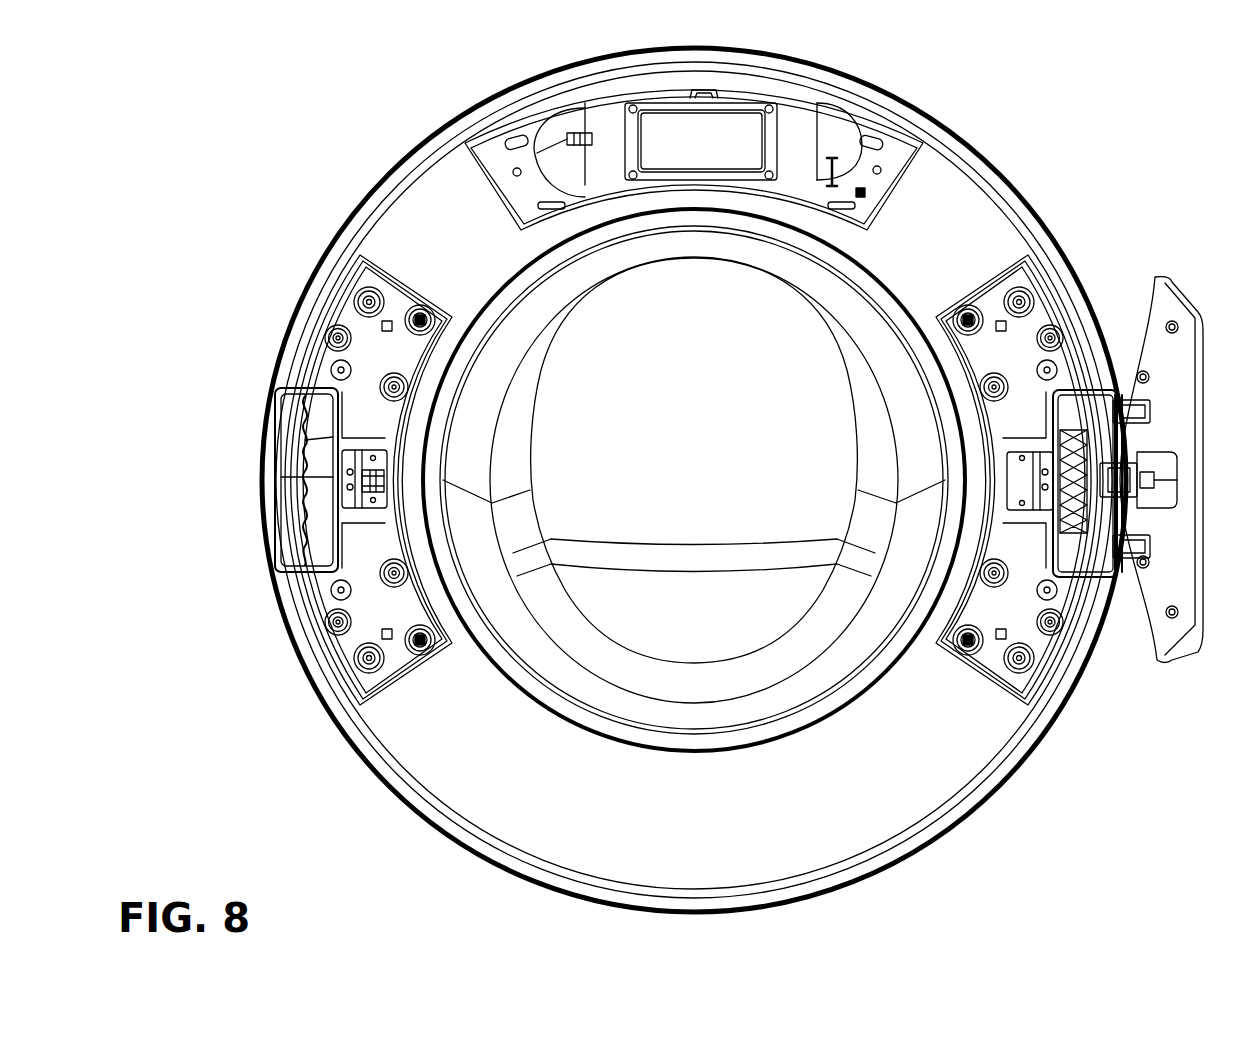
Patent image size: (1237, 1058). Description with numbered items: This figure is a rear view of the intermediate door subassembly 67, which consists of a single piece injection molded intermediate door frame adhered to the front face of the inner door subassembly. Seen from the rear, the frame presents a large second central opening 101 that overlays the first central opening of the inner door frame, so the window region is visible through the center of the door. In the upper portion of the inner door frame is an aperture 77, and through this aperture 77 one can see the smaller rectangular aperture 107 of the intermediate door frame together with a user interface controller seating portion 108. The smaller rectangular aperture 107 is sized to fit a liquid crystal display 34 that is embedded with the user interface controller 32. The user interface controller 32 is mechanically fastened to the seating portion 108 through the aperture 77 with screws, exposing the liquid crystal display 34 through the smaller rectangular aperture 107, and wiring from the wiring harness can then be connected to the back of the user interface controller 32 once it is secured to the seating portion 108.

The intermediate door subassembly 67 is at (955, 98).
The second central opening 101 is at (678, 452).
The aperture 77 is at (553, 118).
The user interface controller seating portion 108 is at (658, 107).
The smaller rectangular aperture 107 is at (746, 148).
The liquid crystal display 34 is at (818, 143).
The user interface controller 32 is at (820, 142).